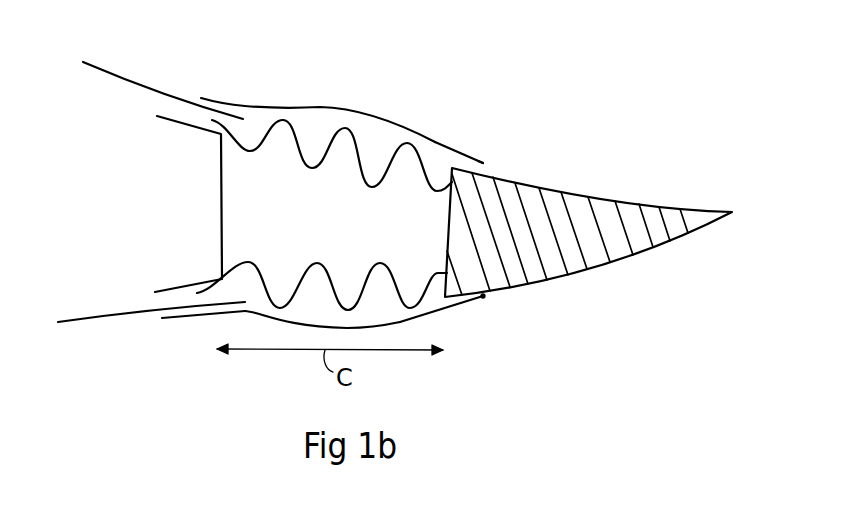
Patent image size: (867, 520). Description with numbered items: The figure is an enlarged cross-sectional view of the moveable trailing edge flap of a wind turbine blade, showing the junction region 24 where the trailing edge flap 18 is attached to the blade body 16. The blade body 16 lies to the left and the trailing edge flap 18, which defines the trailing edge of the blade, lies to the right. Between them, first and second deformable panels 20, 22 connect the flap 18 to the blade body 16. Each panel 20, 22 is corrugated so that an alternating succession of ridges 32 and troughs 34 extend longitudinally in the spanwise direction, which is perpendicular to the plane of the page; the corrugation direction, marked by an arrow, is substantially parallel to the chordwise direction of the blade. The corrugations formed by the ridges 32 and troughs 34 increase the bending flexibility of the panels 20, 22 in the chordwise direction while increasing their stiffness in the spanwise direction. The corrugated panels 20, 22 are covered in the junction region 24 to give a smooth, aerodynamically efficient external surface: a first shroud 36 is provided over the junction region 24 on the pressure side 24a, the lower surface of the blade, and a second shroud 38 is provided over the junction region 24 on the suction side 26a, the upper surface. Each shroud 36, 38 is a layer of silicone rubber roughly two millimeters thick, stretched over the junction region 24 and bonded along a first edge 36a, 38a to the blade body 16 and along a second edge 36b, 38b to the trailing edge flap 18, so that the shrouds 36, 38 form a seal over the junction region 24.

The blade body 16 is at (84, 191).
The trailing edge flap 18 is at (594, 197).
The first deformable panel 20 is at (233, 263).
The second deformable panel 22 is at (246, 153).
The junction region 24 is at (352, 123).
The pressure side 24a is at (147, 332).
The suction side 26a is at (163, 75).
The ridges 32 is at (311, 170).
The troughs 34 is at (402, 176).
The first shroud 36 is at (446, 302).
The first edge of first shroud 36a is at (164, 330).
The second edge of first shroud 36b is at (483, 305).
The second shroud 38 is at (433, 140).
The first edge of second shroud 38a is at (208, 90).
The second edge of second shroud 38b is at (483, 157).